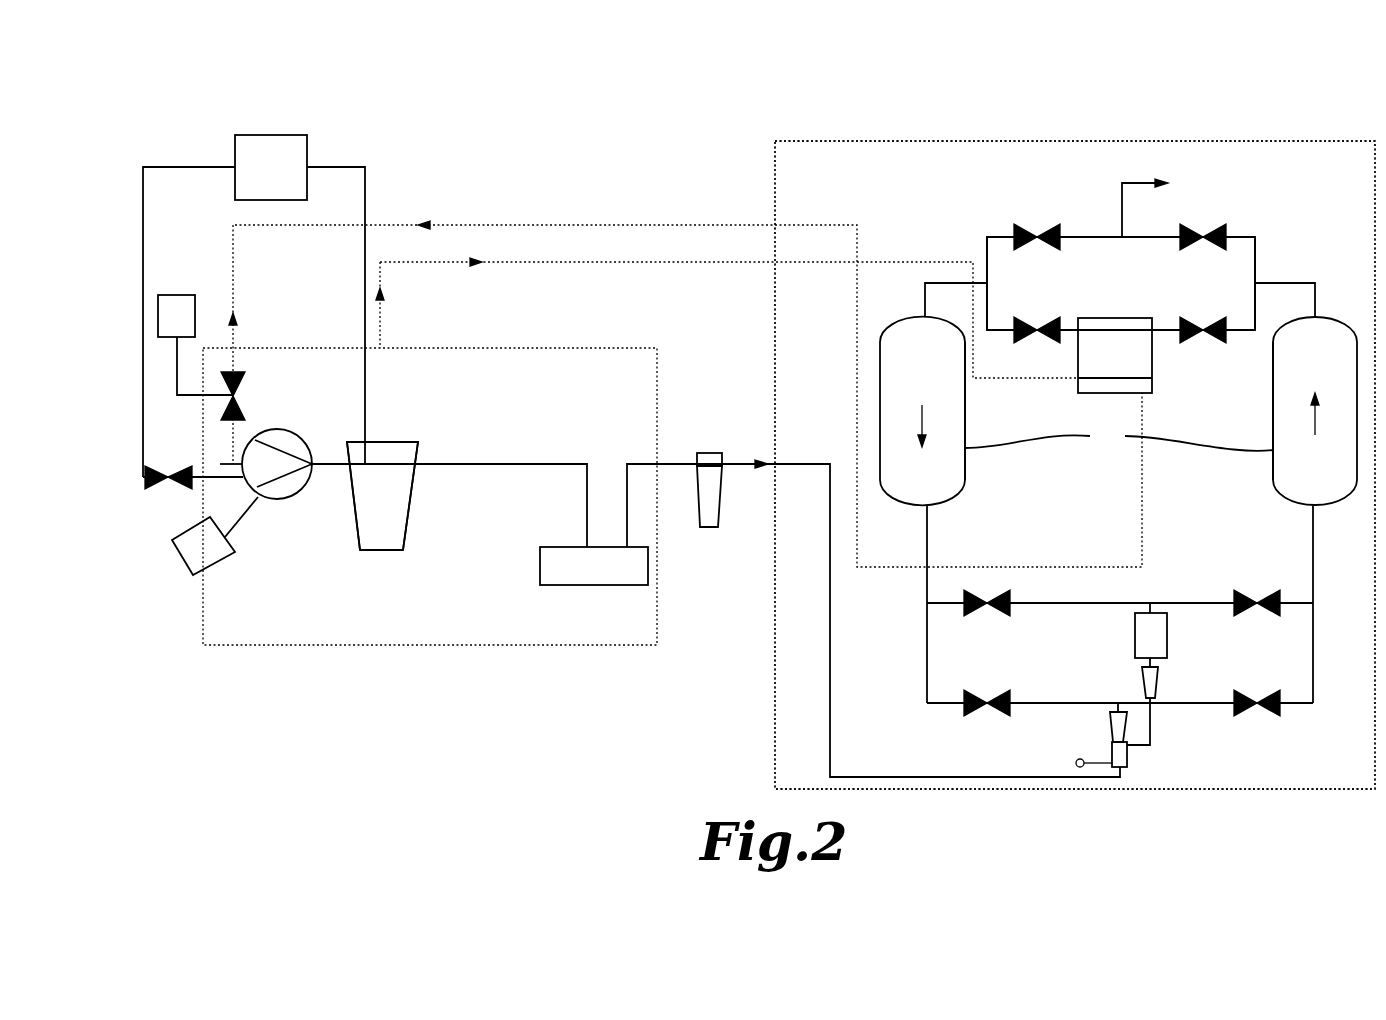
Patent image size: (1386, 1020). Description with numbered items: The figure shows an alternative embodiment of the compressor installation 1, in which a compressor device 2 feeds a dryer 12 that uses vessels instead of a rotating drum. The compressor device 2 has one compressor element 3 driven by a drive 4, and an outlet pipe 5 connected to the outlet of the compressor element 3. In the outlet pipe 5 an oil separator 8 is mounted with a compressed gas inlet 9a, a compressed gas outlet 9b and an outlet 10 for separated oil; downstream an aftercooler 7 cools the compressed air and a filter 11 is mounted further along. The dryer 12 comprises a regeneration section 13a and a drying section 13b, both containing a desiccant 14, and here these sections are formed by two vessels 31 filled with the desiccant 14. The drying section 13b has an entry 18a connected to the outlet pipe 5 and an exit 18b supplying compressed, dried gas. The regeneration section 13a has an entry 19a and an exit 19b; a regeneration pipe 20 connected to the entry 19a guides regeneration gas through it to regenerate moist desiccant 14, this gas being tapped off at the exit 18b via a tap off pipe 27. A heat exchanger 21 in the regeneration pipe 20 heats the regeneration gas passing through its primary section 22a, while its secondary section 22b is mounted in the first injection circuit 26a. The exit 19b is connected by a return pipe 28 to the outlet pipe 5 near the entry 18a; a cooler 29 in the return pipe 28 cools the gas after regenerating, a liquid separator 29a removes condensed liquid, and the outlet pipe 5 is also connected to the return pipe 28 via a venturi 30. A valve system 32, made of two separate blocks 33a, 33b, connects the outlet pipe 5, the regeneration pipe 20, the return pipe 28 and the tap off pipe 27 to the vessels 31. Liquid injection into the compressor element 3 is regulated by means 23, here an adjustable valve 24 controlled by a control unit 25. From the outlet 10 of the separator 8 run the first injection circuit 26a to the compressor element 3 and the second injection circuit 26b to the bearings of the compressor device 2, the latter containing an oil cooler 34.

The compressor installation 1 is at (547, 115).
The compressor device 2 is at (500, 645).
The compressor element 3 is at (300, 487).
The drive 4 is at (218, 562).
The outlet pipe 5 is at (467, 468).
The aftercooler 7 is at (630, 585).
The oil separator 8 is at (380, 550).
The compressed gas inlet 9a is at (351, 470).
The compressed gas outlet 9b is at (413, 470).
The outlet for separated oil 10 is at (378, 442).
The filter 11 is at (708, 527).
The dryer 12 is at (913, 789).
The regeneration section 13a is at (948, 432).
The drying section 13b is at (1283, 435).
The desiccant 14 is at (936, 370).
The entry 18a is at (1305, 507).
The exit 18b is at (1315, 317).
The entry 19a is at (925, 317).
The exit 19b is at (927, 505).
The regeneration pipe 20 is at (1163, 328).
The heat exchanger 21 is at (1152, 370).
The primary section 22a is at (1107, 330).
The secondary section 22b is at (1103, 378).
The means to regulate the amount of liquid injected 23 is at (250, 400).
The adjustable valve 24 is at (245, 395).
The control unit 25 is at (176, 300).
The first injection circuit 26a is at (507, 262).
The second injection circuit 26b is at (186, 167).
The tap off pipe 27 is at (987, 293).
The return pipe 28 is at (1140, 610).
The cooler 29 is at (1135, 637).
The liquid separator 29a is at (1143, 685).
The venturi 30 is at (1112, 752).
The vessels 31 is at (1119, 440).
The valve system 32 is at (1283, 128).
The block 33a is at (1040, 200).
The block 33b is at (1284, 738).
The oil cooler 34 is at (267, 145).